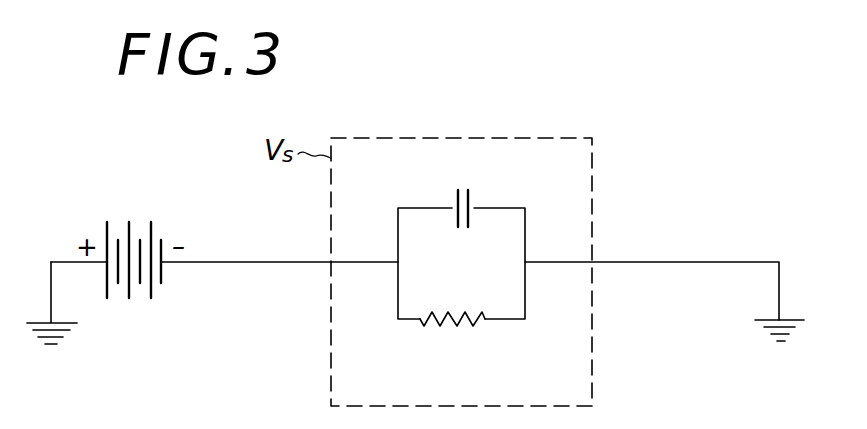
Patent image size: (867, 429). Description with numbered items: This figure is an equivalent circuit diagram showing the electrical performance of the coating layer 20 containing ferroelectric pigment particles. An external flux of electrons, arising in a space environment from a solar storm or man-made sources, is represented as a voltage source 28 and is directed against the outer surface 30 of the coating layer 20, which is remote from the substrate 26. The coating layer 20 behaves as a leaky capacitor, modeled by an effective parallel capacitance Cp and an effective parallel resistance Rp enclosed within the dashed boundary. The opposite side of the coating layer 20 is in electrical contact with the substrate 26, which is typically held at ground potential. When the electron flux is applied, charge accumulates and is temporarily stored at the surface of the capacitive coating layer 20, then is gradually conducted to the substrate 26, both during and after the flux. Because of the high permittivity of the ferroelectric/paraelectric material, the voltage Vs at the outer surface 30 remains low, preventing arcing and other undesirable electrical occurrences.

The coating layer 20 is at (432, 138).
The substrate 26 is at (780, 298).
The voltage source 28 is at (152, 228).
The outer surface 30 is at (331, 349).